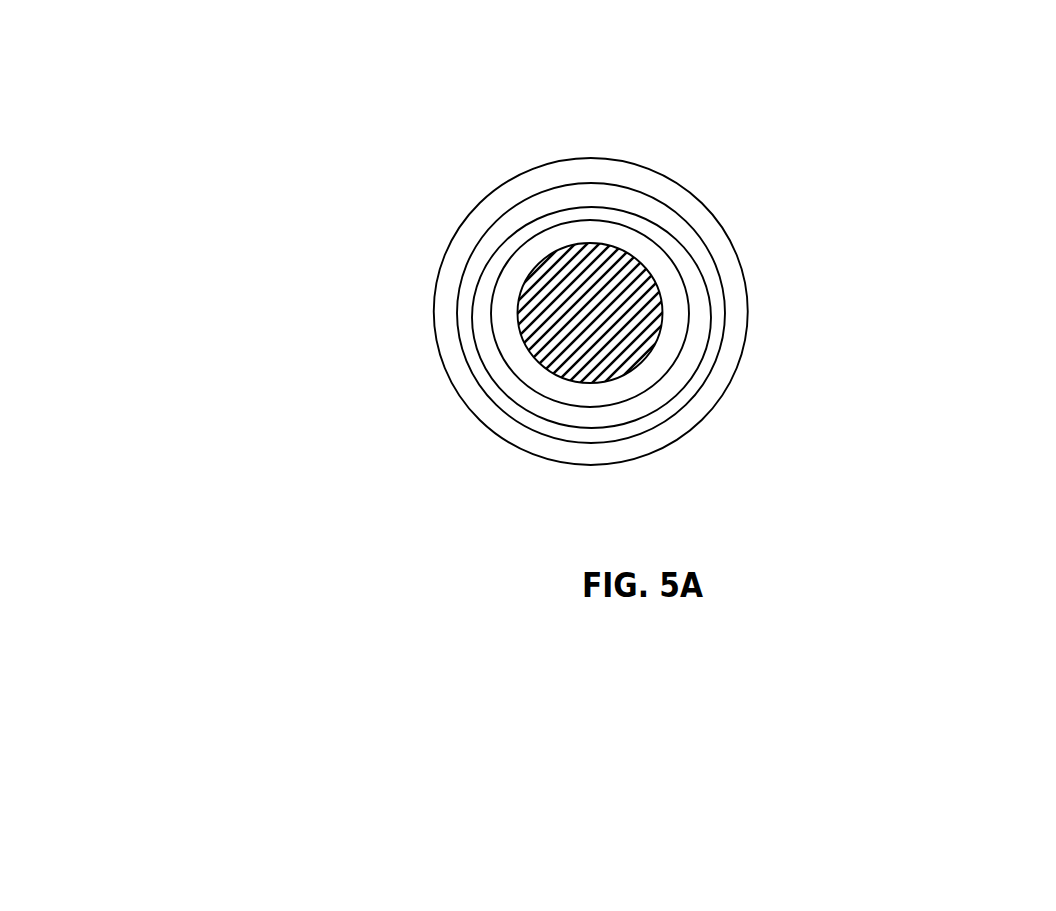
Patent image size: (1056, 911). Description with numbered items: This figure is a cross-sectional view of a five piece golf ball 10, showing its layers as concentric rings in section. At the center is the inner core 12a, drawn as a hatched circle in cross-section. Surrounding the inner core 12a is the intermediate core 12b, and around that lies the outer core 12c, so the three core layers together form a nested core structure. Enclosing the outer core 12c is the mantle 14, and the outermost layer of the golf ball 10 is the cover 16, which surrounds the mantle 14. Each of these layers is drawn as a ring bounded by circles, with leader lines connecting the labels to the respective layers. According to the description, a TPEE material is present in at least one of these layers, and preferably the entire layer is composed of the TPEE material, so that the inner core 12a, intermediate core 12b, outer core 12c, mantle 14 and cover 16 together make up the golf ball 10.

The golf ball 10 is at (592, 271).
The inner core 12a is at (640, 335).
The intermediate core 12b is at (542, 383).
The outer core 12c is at (482, 336).
The mantle 14 is at (518, 220).
The cover 16 is at (683, 183).